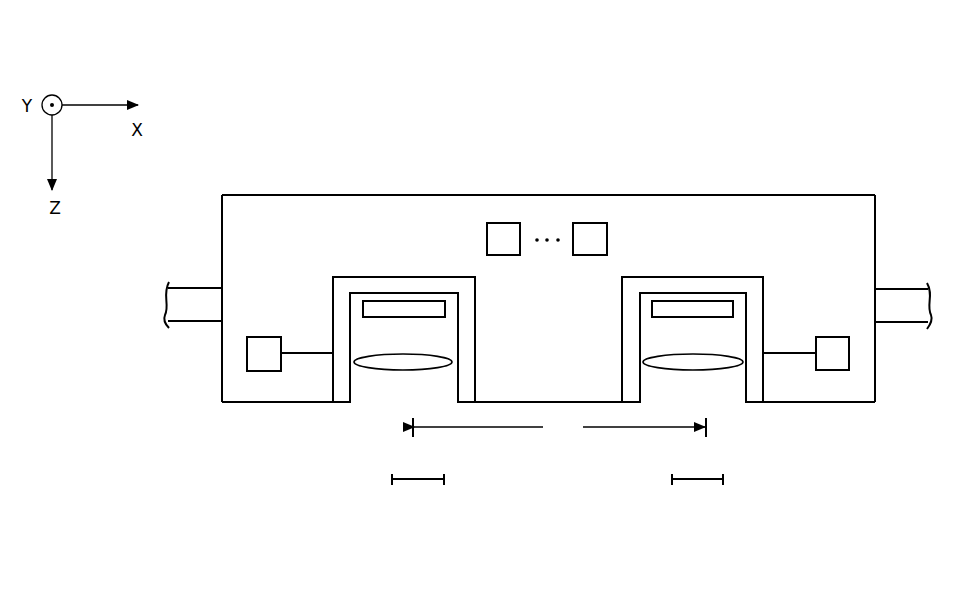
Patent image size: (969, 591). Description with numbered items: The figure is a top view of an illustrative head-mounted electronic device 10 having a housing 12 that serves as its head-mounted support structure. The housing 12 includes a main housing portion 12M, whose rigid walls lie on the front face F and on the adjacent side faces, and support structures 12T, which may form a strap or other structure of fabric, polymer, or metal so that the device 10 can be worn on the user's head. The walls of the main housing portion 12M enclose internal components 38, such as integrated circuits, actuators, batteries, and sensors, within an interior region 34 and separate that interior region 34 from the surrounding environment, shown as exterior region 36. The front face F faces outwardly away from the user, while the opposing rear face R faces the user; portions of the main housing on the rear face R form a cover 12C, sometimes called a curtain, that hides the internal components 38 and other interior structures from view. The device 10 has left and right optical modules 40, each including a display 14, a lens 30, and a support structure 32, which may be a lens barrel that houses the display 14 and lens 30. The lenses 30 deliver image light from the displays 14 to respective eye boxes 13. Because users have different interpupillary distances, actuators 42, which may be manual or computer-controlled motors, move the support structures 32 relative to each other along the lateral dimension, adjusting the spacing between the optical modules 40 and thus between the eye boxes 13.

The electronic device 10 is at (847, 67).
The housing 12 is at (815, 197).
The main housing portion 12M is at (250, 193).
The support structures 12T is at (194, 307).
The cover 12C is at (238, 404).
The eye boxes 13 is at (444, 479).
The displays 14 is at (428, 306).
The lenses 30 is at (437, 363).
The support structures 32 is at (355, 287).
The interior region 34 is at (837, 247).
The exterior region 36 is at (365, 162).
The internal components 38 is at (507, 230).
The optical modules 40 is at (323, 390).
The actuators 42 is at (263, 352).
The front face F is at (678, 178).
The rear face R is at (827, 428).